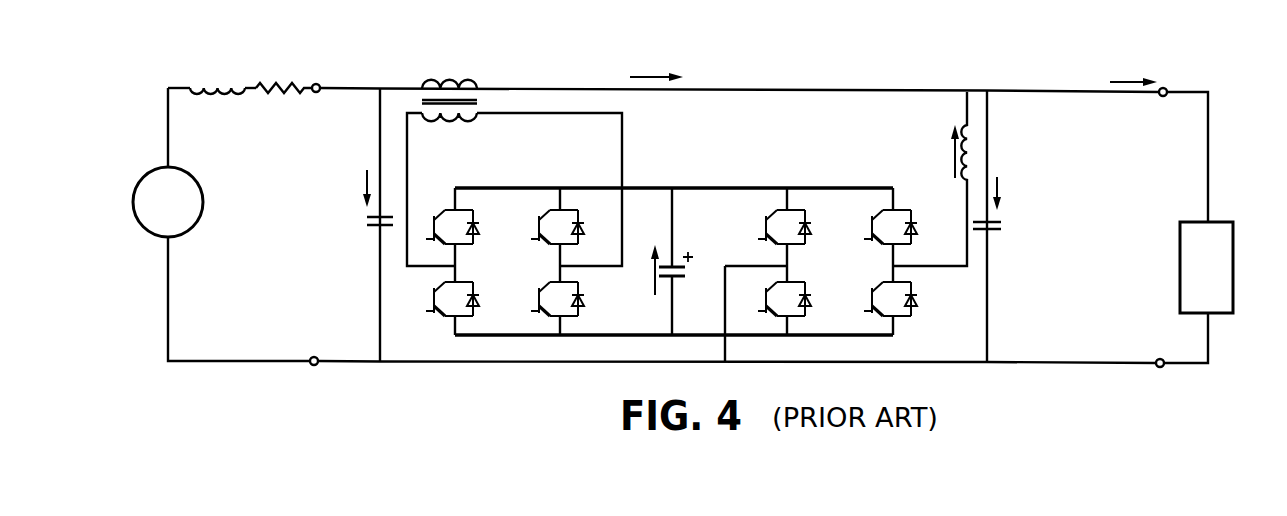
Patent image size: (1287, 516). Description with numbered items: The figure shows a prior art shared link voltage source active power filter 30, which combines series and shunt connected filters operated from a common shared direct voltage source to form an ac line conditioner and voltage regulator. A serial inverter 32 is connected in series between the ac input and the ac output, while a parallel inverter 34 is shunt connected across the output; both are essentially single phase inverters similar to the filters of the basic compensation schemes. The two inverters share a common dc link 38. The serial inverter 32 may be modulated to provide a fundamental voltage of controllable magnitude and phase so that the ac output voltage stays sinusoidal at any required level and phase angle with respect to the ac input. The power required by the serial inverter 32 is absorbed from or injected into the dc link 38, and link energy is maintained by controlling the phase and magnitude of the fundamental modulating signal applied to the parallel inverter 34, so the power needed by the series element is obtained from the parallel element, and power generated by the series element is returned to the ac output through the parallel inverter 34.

The shared link voltage source active power filter 30 is at (196, 31).
The serial inverter 32 is at (522, 175).
The parallel inverter 34 is at (791, 179).
The dc link 38 is at (701, 229).